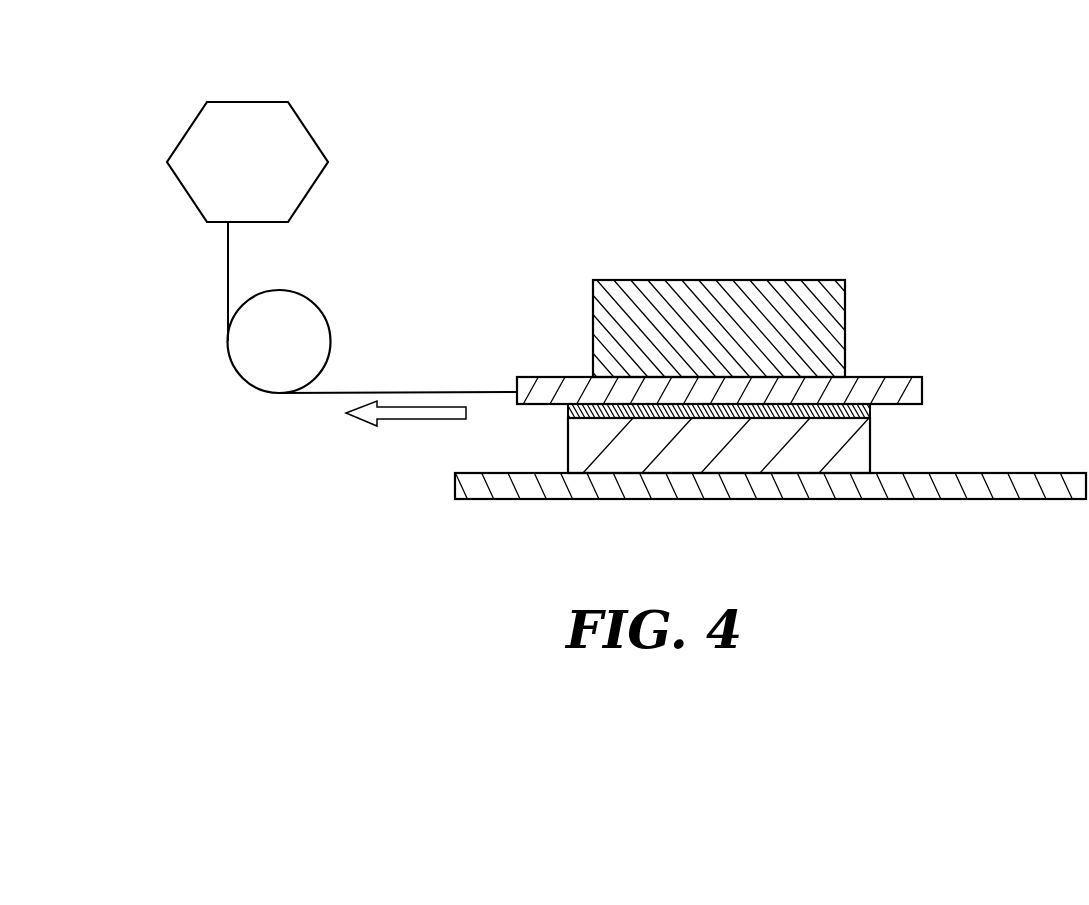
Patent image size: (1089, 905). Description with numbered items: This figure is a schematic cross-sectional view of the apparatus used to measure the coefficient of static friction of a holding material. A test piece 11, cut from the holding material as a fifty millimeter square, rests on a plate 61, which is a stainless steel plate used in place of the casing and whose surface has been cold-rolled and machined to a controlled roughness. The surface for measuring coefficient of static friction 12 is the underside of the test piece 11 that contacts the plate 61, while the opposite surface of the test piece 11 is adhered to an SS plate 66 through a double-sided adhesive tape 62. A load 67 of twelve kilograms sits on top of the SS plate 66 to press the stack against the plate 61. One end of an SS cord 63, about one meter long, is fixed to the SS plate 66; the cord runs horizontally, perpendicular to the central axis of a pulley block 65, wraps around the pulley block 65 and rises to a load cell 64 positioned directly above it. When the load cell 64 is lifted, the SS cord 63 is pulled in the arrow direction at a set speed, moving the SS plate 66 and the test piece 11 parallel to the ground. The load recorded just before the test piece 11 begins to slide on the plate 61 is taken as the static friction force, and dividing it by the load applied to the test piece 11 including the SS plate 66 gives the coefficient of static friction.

The load cell 64 is at (242, 112).
The pulley block 65 is at (312, 316).
The SS cord 63 is at (437, 392).
The load 67 is at (835, 328).
The SS plate 66 is at (912, 392).
The double-sided adhesive tape 62 is at (870, 412).
The test piece 11 is at (580, 448).
The surface for measuring coefficient of static friction 12 is at (678, 475).
The plate 61 is at (1023, 490).